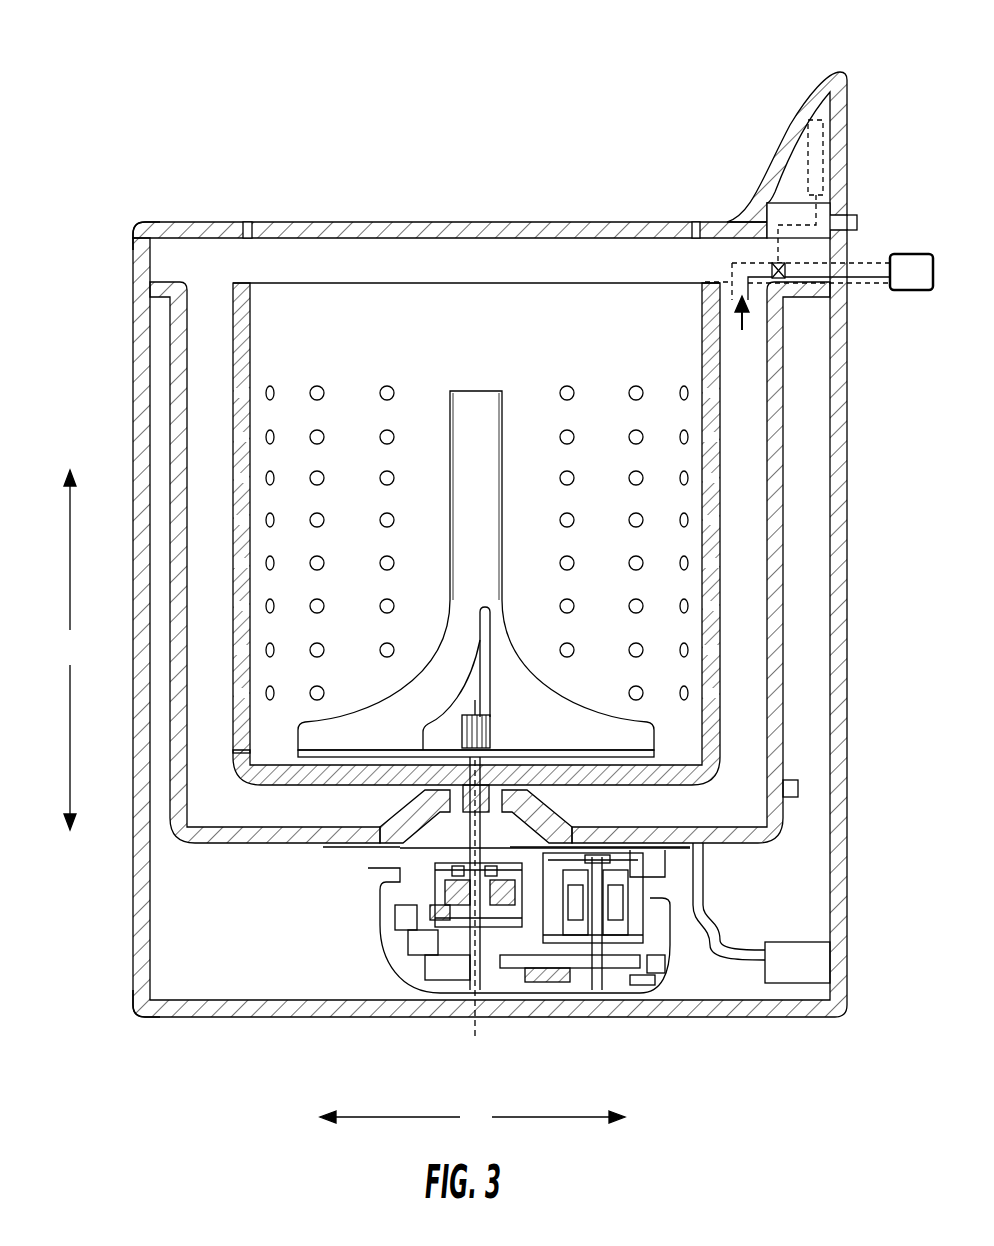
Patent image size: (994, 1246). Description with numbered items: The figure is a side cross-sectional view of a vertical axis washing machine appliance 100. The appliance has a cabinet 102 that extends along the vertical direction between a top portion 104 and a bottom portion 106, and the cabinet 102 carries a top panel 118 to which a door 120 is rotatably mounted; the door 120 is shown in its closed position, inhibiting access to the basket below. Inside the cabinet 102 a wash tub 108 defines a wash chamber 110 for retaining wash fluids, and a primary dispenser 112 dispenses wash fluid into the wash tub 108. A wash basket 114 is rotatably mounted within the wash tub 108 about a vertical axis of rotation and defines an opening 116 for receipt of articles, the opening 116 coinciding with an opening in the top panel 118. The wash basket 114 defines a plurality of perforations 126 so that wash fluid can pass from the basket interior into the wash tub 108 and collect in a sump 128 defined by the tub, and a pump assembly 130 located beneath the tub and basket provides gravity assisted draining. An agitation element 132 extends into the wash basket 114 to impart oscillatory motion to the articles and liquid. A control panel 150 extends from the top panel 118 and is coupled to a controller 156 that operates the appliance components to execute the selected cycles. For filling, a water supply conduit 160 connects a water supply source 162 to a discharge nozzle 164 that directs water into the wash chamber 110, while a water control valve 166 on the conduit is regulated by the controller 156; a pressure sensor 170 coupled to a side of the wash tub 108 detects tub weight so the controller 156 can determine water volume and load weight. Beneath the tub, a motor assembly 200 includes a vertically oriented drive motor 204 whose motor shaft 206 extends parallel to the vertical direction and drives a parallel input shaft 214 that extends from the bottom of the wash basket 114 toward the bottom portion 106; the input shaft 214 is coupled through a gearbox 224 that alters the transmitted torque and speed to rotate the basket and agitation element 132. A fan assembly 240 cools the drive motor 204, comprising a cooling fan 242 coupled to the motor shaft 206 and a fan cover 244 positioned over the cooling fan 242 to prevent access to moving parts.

The washing machine appliance 100 is at (160, 84).
The cabinet 102 is at (140, 366).
The top portion 104 is at (112, 231).
The bottom portion 106 is at (106, 1019).
The wash tub 108 is at (775, 686).
The wash chamber 110 is at (204, 499).
The primary dispenser 112 is at (720, 266).
The wash basket 114 is at (233, 310).
The opening 116 is at (562, 272).
The top panel 118 is at (178, 222).
The door 120 is at (363, 230).
The perforations 126 is at (405, 380).
The sump 128 is at (294, 828).
The pump assembly 130 is at (742, 998).
The agitation element 132 is at (487, 397).
The control panel 150 is at (778, 118).
The controller 156 is at (823, 135).
The water supply conduit 160 is at (866, 280).
The water supply source 162 is at (911, 272).
The discharge nozzle 164 is at (748, 318).
The water control valve 166 is at (786, 268).
The pressure sensor 170 is at (800, 788).
The motor assembly 200 is at (350, 944).
The drive motor 204 is at (640, 906).
The motor shaft 206 is at (597, 990).
The input shaft 214 is at (466, 957).
The gearbox 224 is at (450, 895).
The fan assembly 240 is at (552, 990).
The cooling fan 242 is at (668, 962).
The fan cover 244 is at (655, 985).